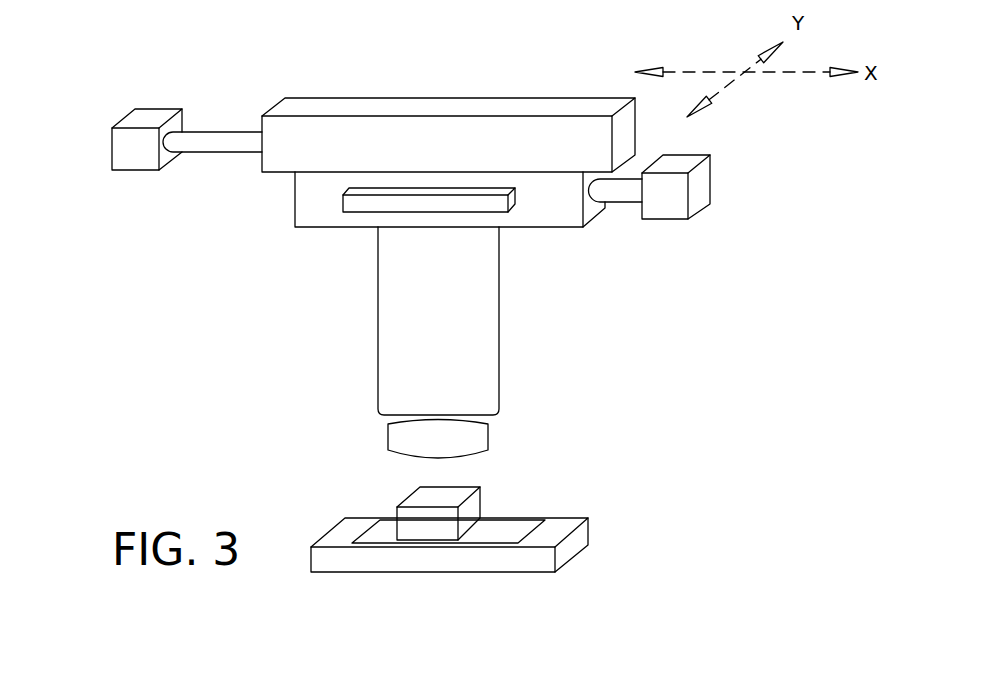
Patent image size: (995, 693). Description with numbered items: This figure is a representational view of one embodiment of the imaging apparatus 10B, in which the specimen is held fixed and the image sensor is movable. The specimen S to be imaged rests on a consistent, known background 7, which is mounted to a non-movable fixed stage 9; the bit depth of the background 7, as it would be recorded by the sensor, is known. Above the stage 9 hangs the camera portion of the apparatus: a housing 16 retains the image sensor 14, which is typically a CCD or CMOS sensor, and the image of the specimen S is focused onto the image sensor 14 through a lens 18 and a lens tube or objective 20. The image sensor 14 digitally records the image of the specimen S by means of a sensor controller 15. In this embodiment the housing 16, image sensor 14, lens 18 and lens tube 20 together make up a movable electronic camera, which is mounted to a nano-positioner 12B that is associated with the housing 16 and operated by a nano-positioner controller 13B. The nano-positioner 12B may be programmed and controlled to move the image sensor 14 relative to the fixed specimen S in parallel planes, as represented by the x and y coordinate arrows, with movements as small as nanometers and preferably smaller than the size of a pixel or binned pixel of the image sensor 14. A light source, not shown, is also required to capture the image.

The imaging apparatus 10B is at (540, 298).
The nano-positioner 12B is at (275, 160).
The nano-positioner controller 13B is at (135, 148).
The image sensor 14 is at (493, 202).
The sensor controller 15 is at (700, 188).
The housing 16 is at (570, 207).
The lens 18 is at (413, 438).
The lens tube 20 is at (499, 362).
The background 7 is at (382, 528).
The stage 9 is at (543, 552).
The specimen S is at (470, 513).